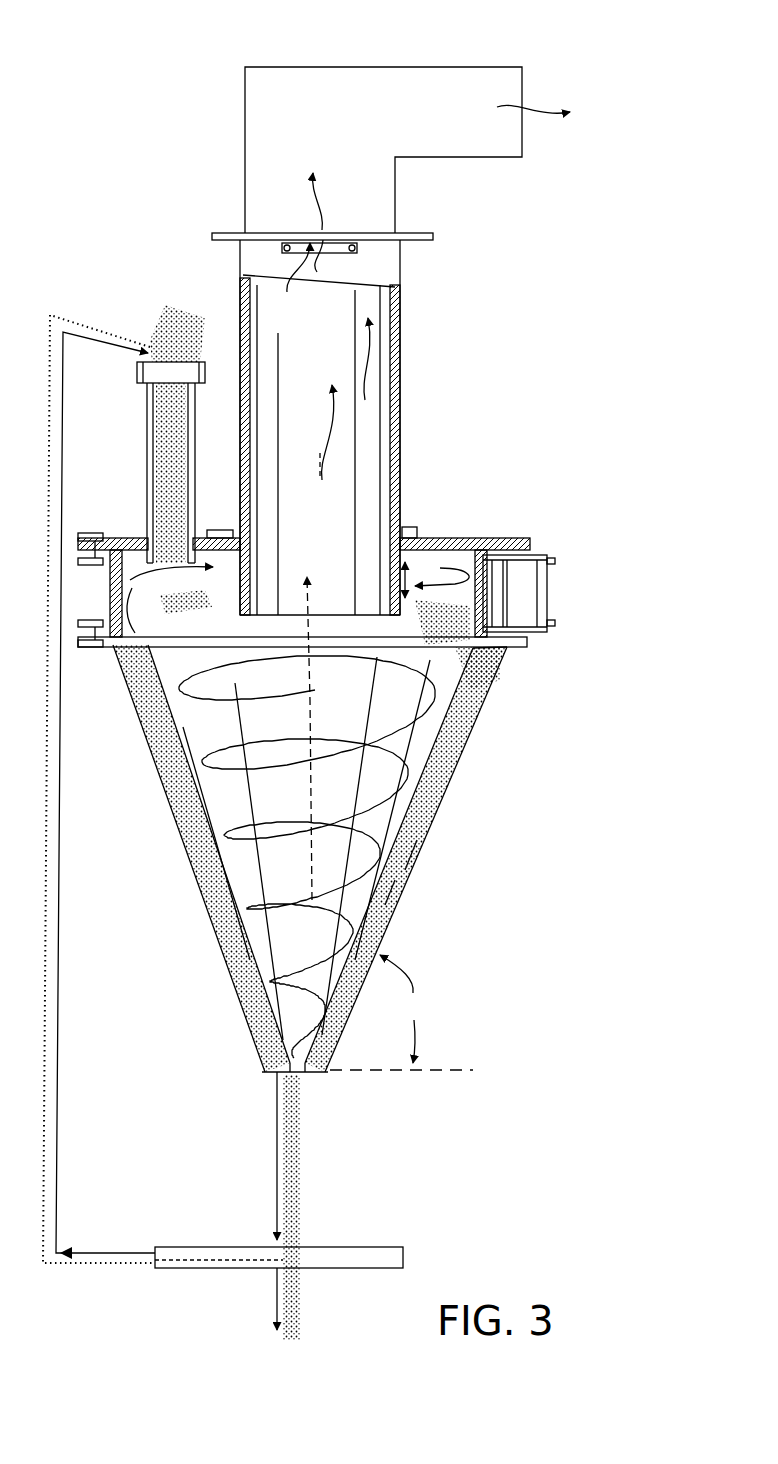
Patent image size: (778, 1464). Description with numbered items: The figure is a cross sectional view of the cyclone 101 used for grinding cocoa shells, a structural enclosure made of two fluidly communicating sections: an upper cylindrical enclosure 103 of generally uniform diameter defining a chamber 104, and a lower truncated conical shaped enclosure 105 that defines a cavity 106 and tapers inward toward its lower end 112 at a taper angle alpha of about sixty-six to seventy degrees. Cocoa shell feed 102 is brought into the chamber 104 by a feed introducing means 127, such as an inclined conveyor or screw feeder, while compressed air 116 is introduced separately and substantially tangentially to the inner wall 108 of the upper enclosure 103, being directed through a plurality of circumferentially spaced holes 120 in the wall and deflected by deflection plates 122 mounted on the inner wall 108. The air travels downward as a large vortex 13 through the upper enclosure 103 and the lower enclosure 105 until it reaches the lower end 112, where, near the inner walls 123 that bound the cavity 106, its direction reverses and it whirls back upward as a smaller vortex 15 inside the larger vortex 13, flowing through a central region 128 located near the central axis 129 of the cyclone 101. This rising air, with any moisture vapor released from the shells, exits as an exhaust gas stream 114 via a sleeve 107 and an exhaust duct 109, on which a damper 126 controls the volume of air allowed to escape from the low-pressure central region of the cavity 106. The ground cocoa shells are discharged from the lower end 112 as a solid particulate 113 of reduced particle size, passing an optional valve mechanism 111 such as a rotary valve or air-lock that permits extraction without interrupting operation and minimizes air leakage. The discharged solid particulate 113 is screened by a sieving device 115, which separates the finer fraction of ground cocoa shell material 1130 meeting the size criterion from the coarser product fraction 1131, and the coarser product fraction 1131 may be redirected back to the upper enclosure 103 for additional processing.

The cyclone 101 is at (317, 886).
The feed 102 is at (175, 322).
The upper cylindrical enclosure 103 is at (122, 538).
The chamber 104 is at (473, 540).
The lower truncated conical shaped enclosure 105 is at (178, 868).
The cavity 106 is at (390, 893).
The sleeve 107 is at (457, 562).
The inner wall 108 is at (115, 642).
The exhaust duct 109 is at (440, 65).
The valve mechanism 111 is at (313, 1077).
The lower end 112 is at (253, 1023).
The solid particulate 113 is at (297, 1183).
The exhaust gas stream 114 is at (537, 110).
The sieving device 115 is at (382, 1250).
The compressed air 116 is at (122, 598).
The holes 120 is at (505, 613).
The deflection plates 122 is at (507, 578).
The inner walls 123 is at (460, 723).
The damper 126 is at (306, 300).
The feed introducing means 127 is at (136, 375).
The central region 128 is at (417, 860).
The central axis 129 is at (450, 781).
The vortex 13 is at (473, 673).
The smaller vortex 15 is at (168, 793).
The finer fraction of ground cocoa shell material 1130 is at (297, 1290).
The coarser product fraction 1131 is at (105, 1252).